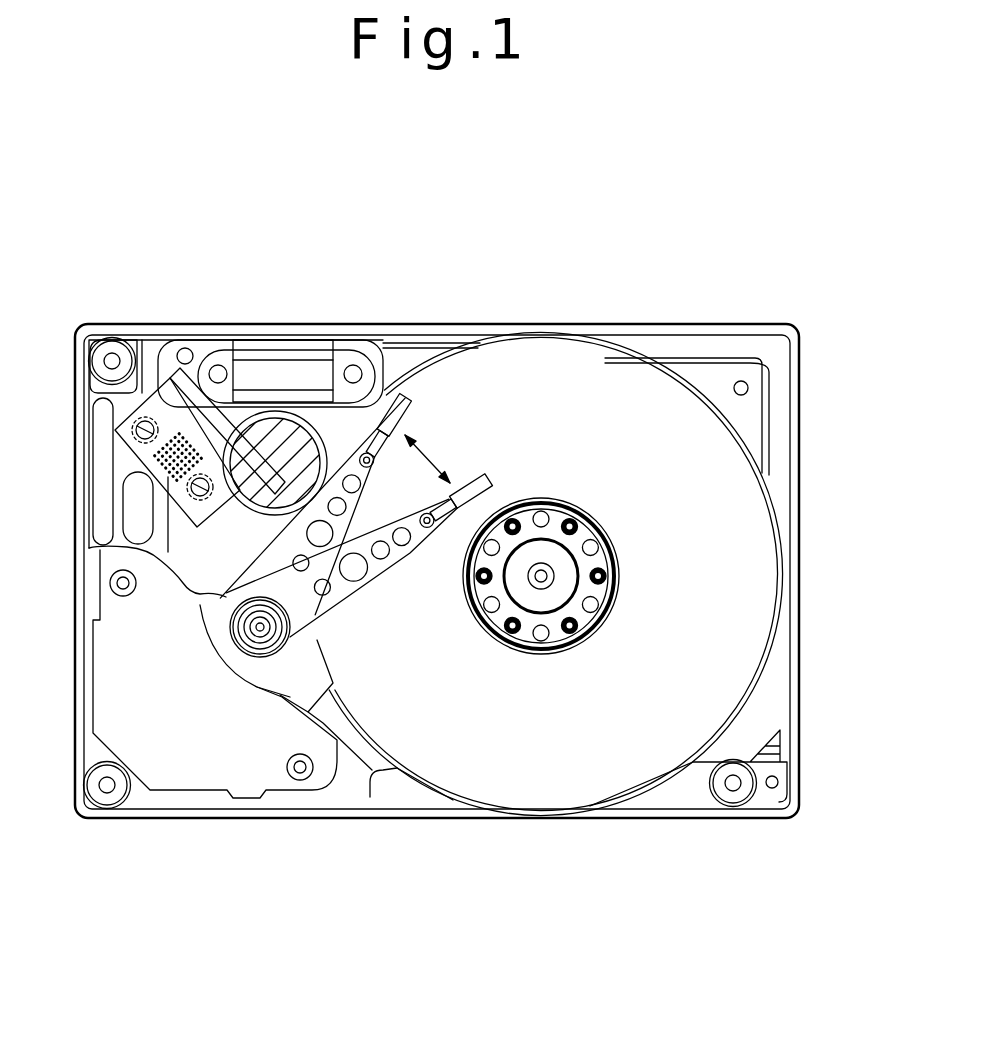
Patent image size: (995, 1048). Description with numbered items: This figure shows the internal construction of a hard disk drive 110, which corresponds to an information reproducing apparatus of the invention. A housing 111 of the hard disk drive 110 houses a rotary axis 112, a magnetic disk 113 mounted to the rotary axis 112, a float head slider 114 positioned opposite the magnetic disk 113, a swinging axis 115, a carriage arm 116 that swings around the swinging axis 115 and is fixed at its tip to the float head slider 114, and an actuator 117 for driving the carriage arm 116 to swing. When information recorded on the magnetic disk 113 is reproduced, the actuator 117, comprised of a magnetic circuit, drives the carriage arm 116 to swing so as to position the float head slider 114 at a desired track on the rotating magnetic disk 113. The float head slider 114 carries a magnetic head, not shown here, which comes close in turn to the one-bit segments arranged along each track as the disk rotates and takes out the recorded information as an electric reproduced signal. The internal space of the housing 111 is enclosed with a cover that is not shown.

The hard disk drive 110 is at (622, 212).
The housing 111 is at (664, 324).
The rotary axis 112 is at (562, 582).
The magnetic disk 113 is at (743, 527).
The float head slider 114 is at (483, 482).
The swinging axis 115 is at (260, 645).
The carriage arm 116 is at (343, 595).
The actuator 117 is at (170, 767).